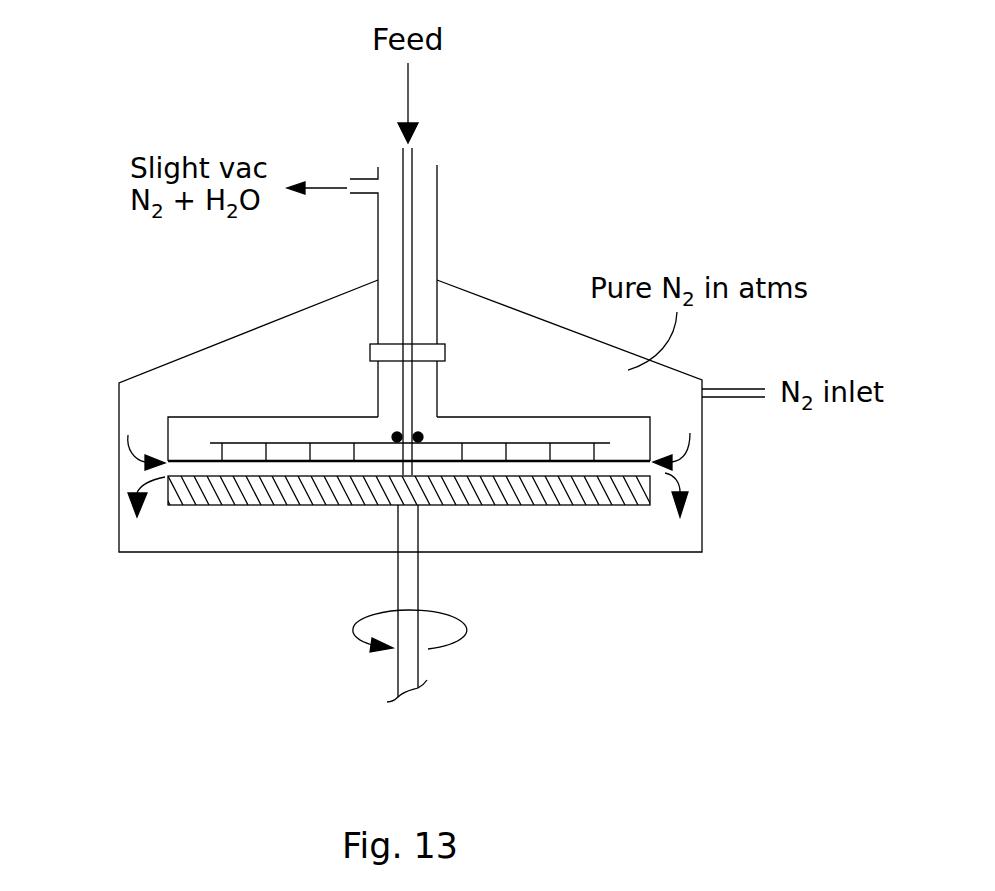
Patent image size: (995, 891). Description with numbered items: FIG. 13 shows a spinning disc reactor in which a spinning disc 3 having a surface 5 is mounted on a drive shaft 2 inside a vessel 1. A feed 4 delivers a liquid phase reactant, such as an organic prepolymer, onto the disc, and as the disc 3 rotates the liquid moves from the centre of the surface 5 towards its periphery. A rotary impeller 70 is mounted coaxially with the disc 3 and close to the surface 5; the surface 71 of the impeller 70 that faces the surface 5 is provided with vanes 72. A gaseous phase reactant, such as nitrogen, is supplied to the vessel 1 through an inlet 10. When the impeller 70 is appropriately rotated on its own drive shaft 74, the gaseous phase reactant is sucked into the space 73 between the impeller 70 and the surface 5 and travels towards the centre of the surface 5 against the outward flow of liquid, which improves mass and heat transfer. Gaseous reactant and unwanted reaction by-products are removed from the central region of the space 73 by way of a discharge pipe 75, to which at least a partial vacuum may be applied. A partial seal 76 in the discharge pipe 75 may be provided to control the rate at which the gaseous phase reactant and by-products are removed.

The vessel 1 is at (118, 481).
The drive shaft 2 is at (397, 665).
The spinning disc 3 is at (215, 505).
The feed 4 is at (413, 212).
The surface 5 is at (307, 478).
The inlet 10 is at (742, 388).
The rotary impeller 70 is at (655, 413).
The surface of the impeller 71 is at (188, 463).
The vanes 72 is at (245, 453).
The space 73 is at (643, 468).
The drive shaft 74 is at (438, 265).
The discharge pipe 75 is at (393, 267).
The partial seal 76 is at (370, 352).